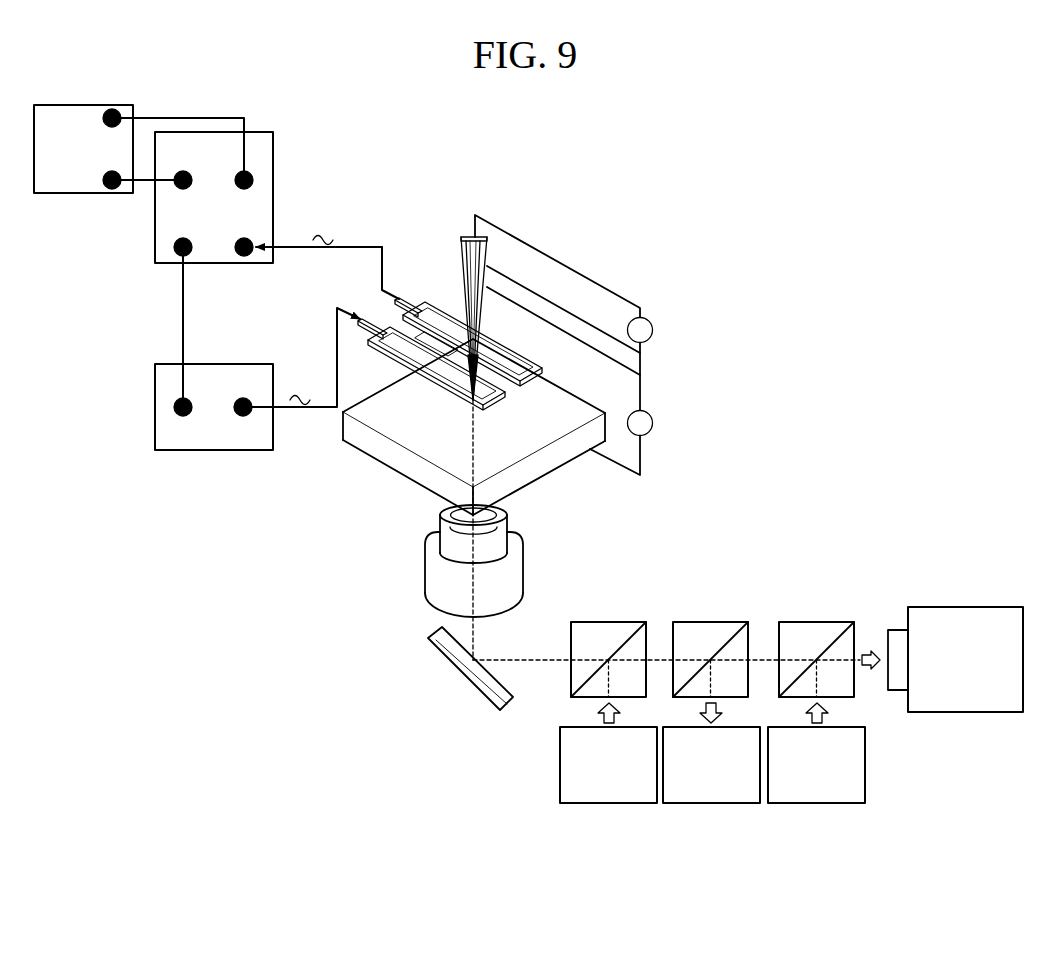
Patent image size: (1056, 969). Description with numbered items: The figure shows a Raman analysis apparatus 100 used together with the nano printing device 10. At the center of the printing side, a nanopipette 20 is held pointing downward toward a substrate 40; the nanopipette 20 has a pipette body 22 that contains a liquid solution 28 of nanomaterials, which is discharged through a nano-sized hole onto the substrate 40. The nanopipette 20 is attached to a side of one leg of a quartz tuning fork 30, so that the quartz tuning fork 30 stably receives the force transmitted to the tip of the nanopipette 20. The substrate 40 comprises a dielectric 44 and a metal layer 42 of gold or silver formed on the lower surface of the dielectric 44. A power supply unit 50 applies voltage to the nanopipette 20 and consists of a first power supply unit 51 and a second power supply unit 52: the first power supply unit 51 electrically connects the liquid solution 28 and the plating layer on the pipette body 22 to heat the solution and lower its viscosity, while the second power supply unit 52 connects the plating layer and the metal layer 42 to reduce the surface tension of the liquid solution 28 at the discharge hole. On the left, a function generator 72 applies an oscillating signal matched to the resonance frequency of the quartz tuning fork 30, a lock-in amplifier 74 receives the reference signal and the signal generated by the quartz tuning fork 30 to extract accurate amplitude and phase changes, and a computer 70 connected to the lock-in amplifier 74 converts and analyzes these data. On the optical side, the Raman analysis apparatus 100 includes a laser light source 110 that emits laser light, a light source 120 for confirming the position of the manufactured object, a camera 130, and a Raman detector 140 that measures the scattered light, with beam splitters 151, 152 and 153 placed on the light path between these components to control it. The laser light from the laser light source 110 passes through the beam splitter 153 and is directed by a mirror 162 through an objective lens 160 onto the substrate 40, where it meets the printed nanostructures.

The nano printing device 10 is at (562, 236).
The nanopipette 20 is at (431, 286).
The pipette body 22 is at (463, 289).
The liquid solution 28 is at (471, 249).
The quartz tuning fork 30 is at (390, 340).
The substrate 40 is at (516, 445).
The metal layer 42 is at (503, 497).
The dielectric 44 is at (547, 462).
The power supply unit 50 is at (699, 378).
The first power supply unit 51 is at (653, 330).
The second power supply unit 52 is at (676, 425).
The computer 70 is at (83, 104).
The function generator 72 is at (155, 412).
The lock-in amplifier 74 is at (255, 131).
The Raman analysis apparatus 100 is at (791, 675).
The laser light source 110 is at (817, 805).
The light source 120 is at (609, 805).
The camera 130 is at (711, 805).
The Raman detector 140 is at (963, 714).
The beam splitter 151 is at (609, 620).
The beam splitter 152 is at (711, 620).
The beam splitter 153 is at (817, 620).
The objective lens 160 is at (437, 578).
The mirror 162 is at (460, 662).